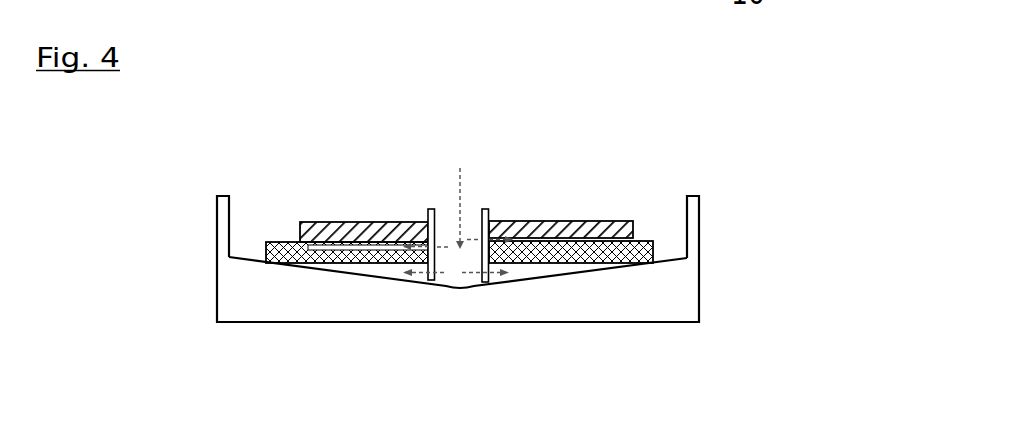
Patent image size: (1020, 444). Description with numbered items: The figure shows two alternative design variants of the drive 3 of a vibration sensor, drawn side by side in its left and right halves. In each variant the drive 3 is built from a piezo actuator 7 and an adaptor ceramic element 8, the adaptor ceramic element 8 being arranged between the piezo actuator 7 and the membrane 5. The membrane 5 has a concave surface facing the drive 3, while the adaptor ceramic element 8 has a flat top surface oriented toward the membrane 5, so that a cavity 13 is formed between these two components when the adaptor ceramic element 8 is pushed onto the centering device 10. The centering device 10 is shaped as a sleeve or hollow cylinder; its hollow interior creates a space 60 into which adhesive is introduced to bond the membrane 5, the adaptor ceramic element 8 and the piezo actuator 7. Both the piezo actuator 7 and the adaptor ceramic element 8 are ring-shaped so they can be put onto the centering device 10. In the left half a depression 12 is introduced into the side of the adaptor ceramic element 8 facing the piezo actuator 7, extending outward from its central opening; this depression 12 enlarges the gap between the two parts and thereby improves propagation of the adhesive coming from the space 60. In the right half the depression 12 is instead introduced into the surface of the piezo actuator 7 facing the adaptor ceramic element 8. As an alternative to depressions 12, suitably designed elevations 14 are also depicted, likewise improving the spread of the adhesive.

The drive 3 is at (350, 190).
The membrane 5 is at (242, 273).
The piezo actuator 7 is at (300, 222).
The adaptor ceramic element 8 is at (266, 253).
The centering device 10 is at (428, 210).
The depression 12 is at (348, 247).
The cavity 13 is at (512, 267).
The elevation 14 is at (289, 249).
The space 60 is at (468, 218).